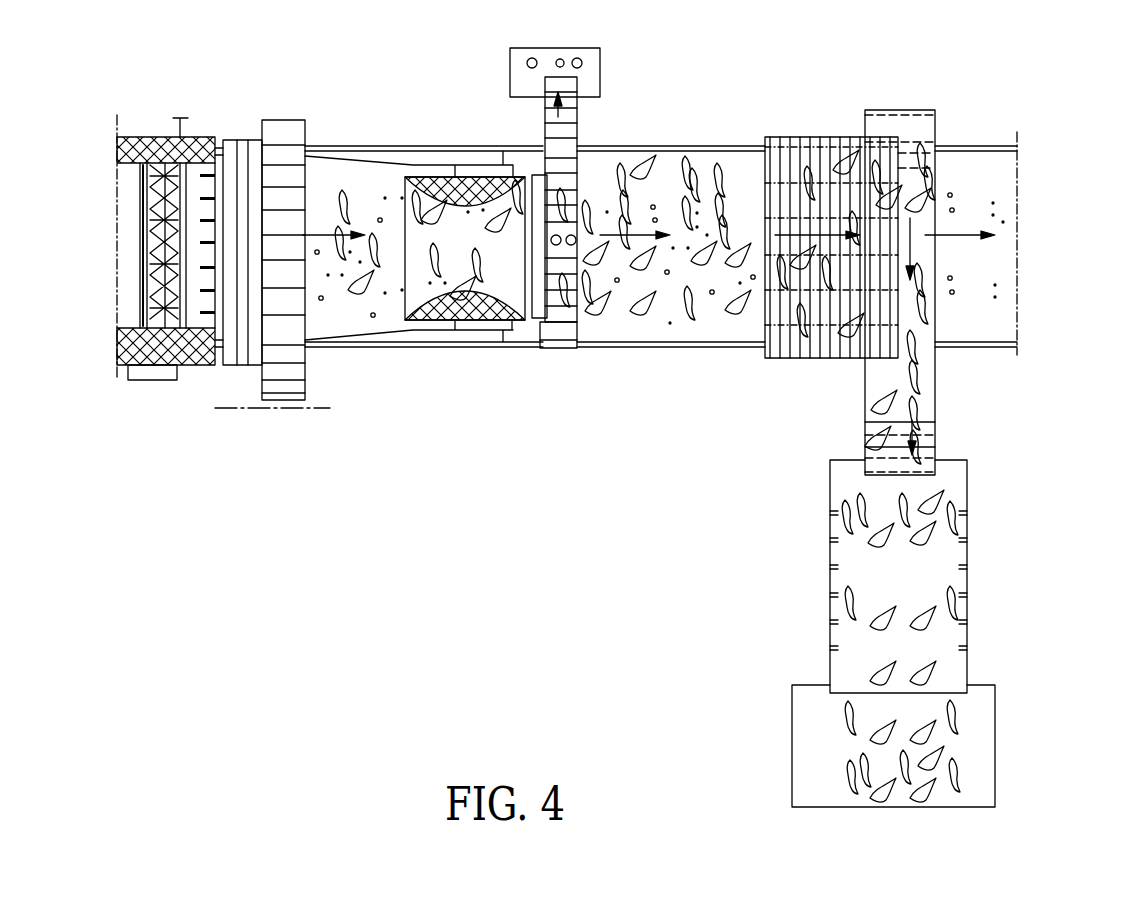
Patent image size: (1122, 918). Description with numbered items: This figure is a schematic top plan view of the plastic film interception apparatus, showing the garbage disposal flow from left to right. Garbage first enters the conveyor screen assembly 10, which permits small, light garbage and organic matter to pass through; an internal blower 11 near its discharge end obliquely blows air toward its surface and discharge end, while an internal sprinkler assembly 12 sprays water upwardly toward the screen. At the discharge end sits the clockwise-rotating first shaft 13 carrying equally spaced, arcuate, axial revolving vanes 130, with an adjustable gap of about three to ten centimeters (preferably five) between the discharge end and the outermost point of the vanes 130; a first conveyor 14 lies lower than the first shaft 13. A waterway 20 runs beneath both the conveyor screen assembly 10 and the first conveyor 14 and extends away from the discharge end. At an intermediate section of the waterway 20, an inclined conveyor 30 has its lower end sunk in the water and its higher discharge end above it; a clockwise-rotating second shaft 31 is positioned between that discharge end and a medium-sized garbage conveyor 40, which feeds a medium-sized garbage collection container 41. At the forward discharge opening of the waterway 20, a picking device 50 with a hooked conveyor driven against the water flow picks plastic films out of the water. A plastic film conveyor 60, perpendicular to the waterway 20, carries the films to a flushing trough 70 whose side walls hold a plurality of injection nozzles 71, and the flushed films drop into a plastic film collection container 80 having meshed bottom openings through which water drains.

The conveyor screen assembly 10 is at (200, 132).
The internal blower 11 is at (152, 263).
The internal sprinkler assembly 12 is at (152, 312).
The first shaft 13 is at (242, 145).
The revolving vanes 130 is at (270, 155).
The first conveyor 14 is at (305, 143).
The waterway 20 is at (357, 350).
The inclined conveyor 30 is at (475, 190).
The second shaft 31 is at (533, 305).
The medium-sized garbage conveyor 40 is at (558, 352).
The medium-sized garbage collection container 41 is at (593, 65).
The picking device 50 is at (782, 365).
The plastic film conveyor 60 is at (925, 130).
The flushing trough 70 is at (943, 562).
The injection nozzles 71 is at (832, 575).
The plastic film collection container 80 is at (982, 738).